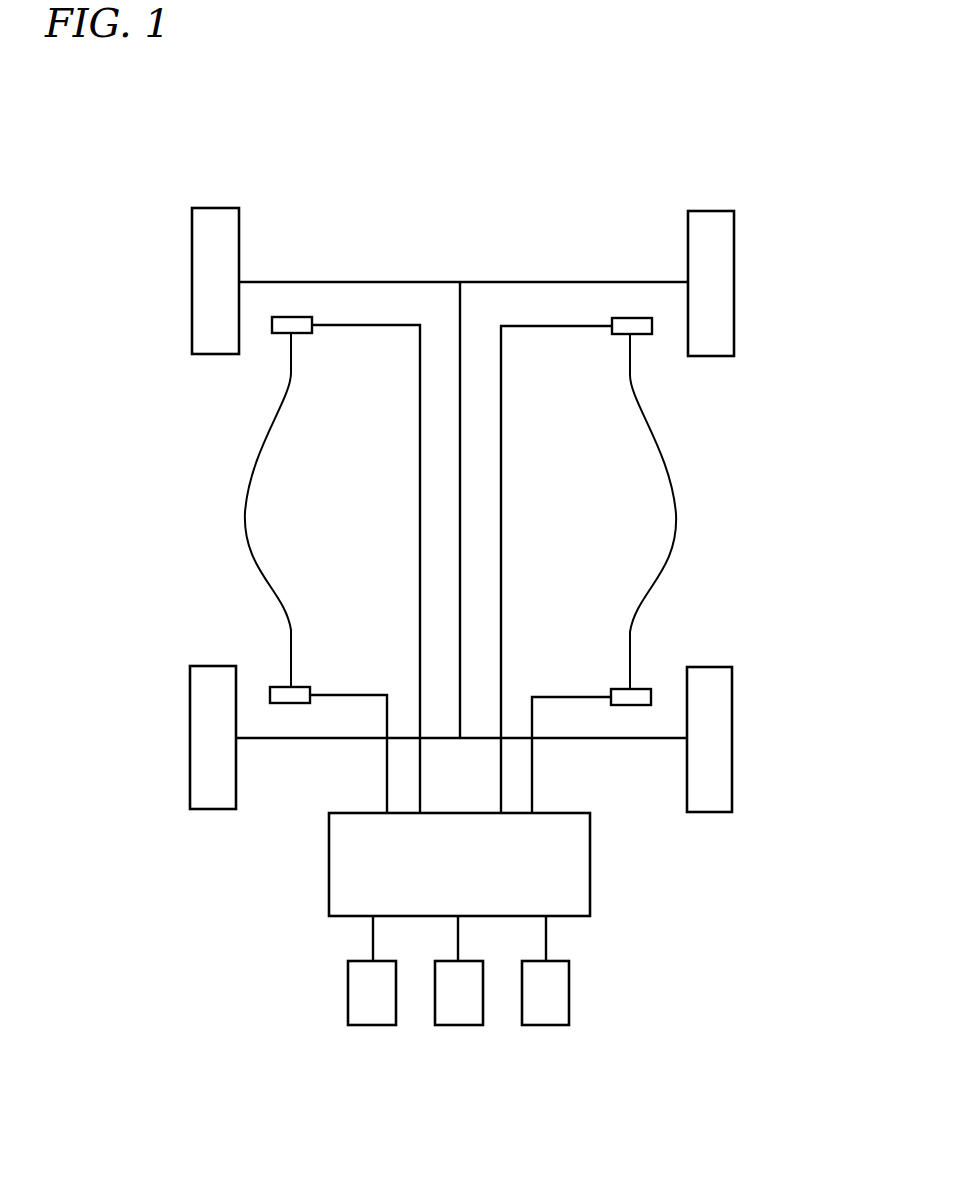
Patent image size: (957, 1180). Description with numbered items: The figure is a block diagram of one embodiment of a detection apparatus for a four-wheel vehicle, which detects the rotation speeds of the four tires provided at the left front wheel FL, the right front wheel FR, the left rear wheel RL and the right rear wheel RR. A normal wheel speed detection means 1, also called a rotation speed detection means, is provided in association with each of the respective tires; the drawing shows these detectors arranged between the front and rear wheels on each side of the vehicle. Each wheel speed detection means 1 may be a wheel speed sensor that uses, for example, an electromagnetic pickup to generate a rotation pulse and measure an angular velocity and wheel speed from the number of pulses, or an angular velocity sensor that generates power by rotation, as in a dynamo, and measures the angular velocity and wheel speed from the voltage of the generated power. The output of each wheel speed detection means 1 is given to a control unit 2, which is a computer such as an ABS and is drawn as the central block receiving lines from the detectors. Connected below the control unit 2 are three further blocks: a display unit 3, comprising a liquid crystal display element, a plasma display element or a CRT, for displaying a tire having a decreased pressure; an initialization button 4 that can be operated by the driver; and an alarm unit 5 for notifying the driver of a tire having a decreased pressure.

The left front wheel FL is at (192, 260).
The right front wheel FR is at (734, 262).
The left rear wheel RL is at (190, 718).
The right rear wheel RR is at (732, 718).
The wheel speed detection means 1 is at (463, 511).
The control unit 2 is at (590, 870).
The display unit 3 is at (372, 1025).
The initialization button 4 is at (458, 1025).
The alarm unit 5 is at (545, 1025).